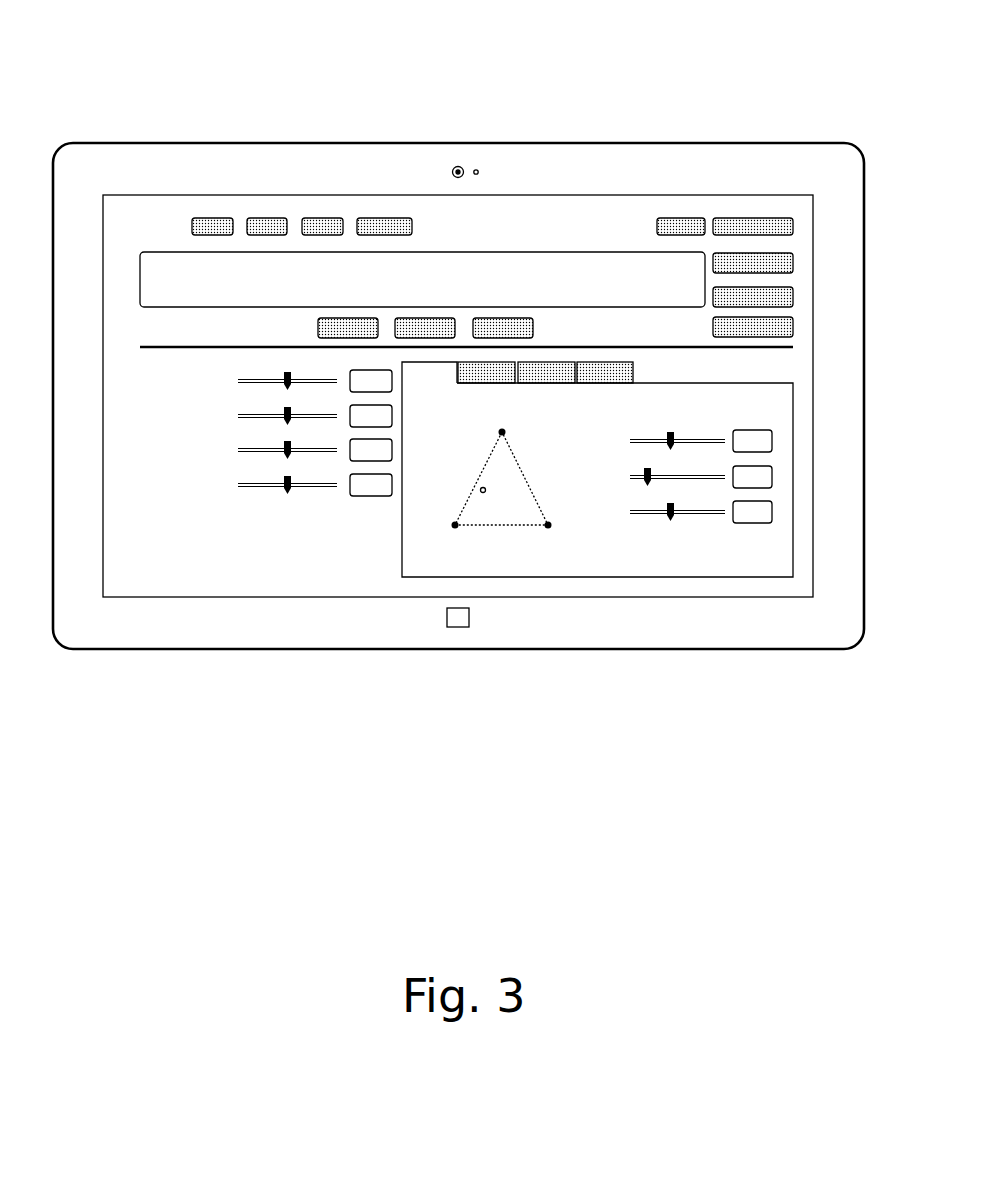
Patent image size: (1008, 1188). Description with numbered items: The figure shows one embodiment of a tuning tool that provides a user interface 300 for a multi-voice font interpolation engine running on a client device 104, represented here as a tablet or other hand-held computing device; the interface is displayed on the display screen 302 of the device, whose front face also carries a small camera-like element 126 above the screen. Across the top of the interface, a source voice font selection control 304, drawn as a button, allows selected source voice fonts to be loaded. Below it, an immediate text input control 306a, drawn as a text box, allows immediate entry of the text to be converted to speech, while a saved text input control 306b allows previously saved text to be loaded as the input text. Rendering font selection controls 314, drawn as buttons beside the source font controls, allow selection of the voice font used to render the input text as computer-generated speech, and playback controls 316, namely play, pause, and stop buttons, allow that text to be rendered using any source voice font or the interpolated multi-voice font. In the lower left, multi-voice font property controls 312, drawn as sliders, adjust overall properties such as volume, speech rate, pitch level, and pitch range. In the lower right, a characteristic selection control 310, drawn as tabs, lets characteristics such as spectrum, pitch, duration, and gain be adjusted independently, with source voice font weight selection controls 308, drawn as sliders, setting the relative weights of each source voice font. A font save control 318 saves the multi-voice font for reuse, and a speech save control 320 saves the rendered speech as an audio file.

The client device 104 is at (648, 160).
The camera 126 is at (476, 168).
The user interface 300 is at (478, 377).
The display screen 302 is at (595, 195).
The source voice font selection control 304 is at (750, 222).
The immediate text input control 306a is at (150, 277).
The saved text input control 306b is at (790, 262).
The source voice font weight selection controls 308 is at (703, 510).
The characteristic selection control 310 is at (586, 533).
The multi-voice font property controls 312 is at (258, 486).
The rendering font selection controls 314 is at (270, 212).
The playback controls 316 is at (412, 318).
The font save control 318 is at (790, 327).
The speech save control 320 is at (785, 297).